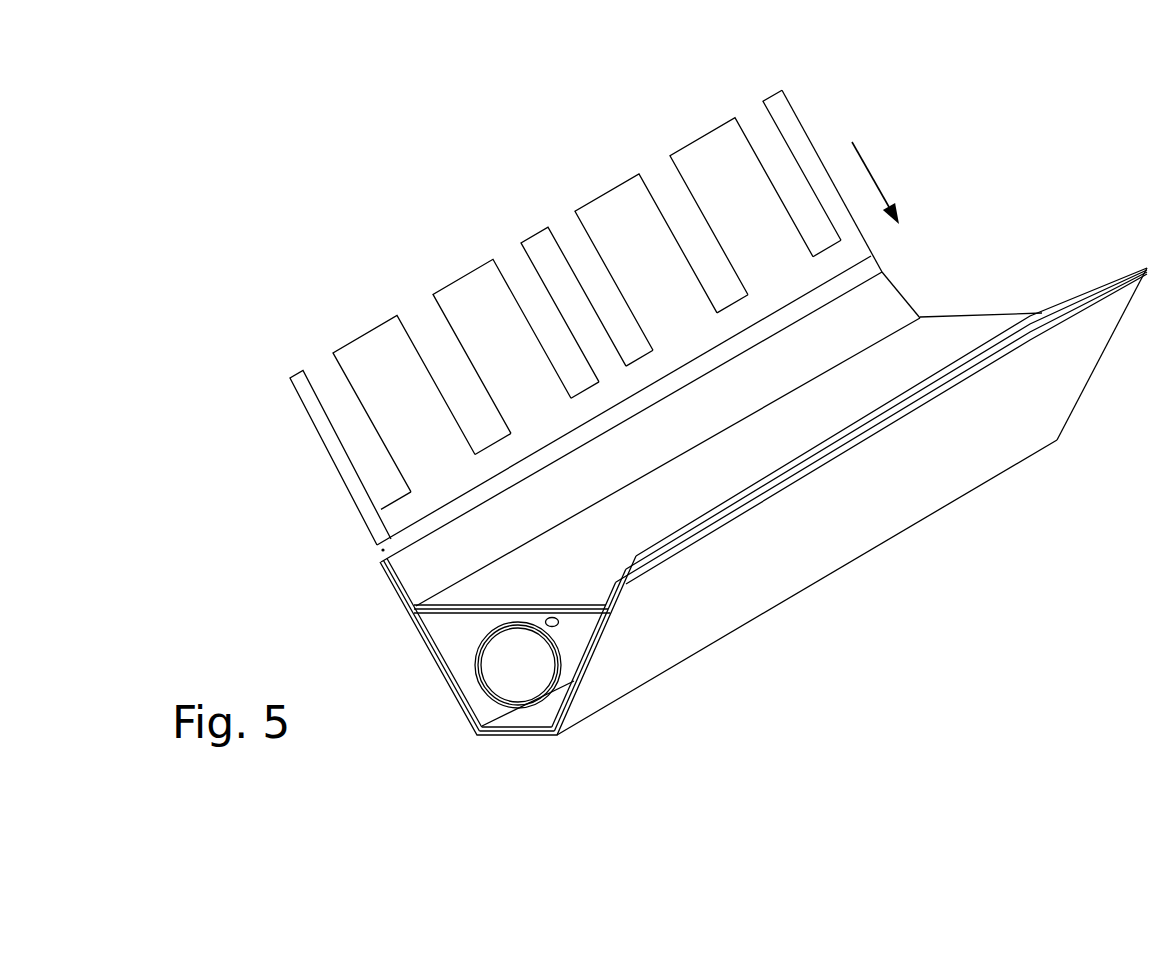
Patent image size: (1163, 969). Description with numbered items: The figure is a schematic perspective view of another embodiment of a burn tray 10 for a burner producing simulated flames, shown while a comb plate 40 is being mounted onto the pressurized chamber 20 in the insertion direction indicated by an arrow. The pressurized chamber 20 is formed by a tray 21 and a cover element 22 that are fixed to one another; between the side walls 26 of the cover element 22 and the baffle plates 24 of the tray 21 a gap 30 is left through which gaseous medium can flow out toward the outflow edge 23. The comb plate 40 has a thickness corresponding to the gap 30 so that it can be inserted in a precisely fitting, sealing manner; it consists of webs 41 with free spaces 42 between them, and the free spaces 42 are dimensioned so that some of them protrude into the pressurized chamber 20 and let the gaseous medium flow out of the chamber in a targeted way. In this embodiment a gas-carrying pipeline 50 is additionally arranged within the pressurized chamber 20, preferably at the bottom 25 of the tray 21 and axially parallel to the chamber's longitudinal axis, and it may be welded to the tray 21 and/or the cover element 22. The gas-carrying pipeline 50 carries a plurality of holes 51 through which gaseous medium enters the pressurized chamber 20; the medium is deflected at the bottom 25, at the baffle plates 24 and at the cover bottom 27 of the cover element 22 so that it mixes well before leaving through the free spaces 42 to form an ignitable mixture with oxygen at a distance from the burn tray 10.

The burn tray 10 is at (560, 167).
The pressurized chamber 20 is at (529, 737).
The tray 21 is at (838, 545).
The cover element 22 is at (947, 330).
The outflow edge 23 is at (1106, 265).
The baffle plates 24 is at (1018, 432).
The bottom 25 is at (548, 712).
The side walls 26 is at (885, 286).
The cover bottom 27 is at (987, 330).
The gap 30 is at (400, 582).
The comb plate 40 is at (303, 455).
The webs 41 is at (378, 358).
The free spaces 42 is at (515, 265).
The gas-carrying pipeline 50 is at (566, 638).
The holes 51 is at (552, 616).